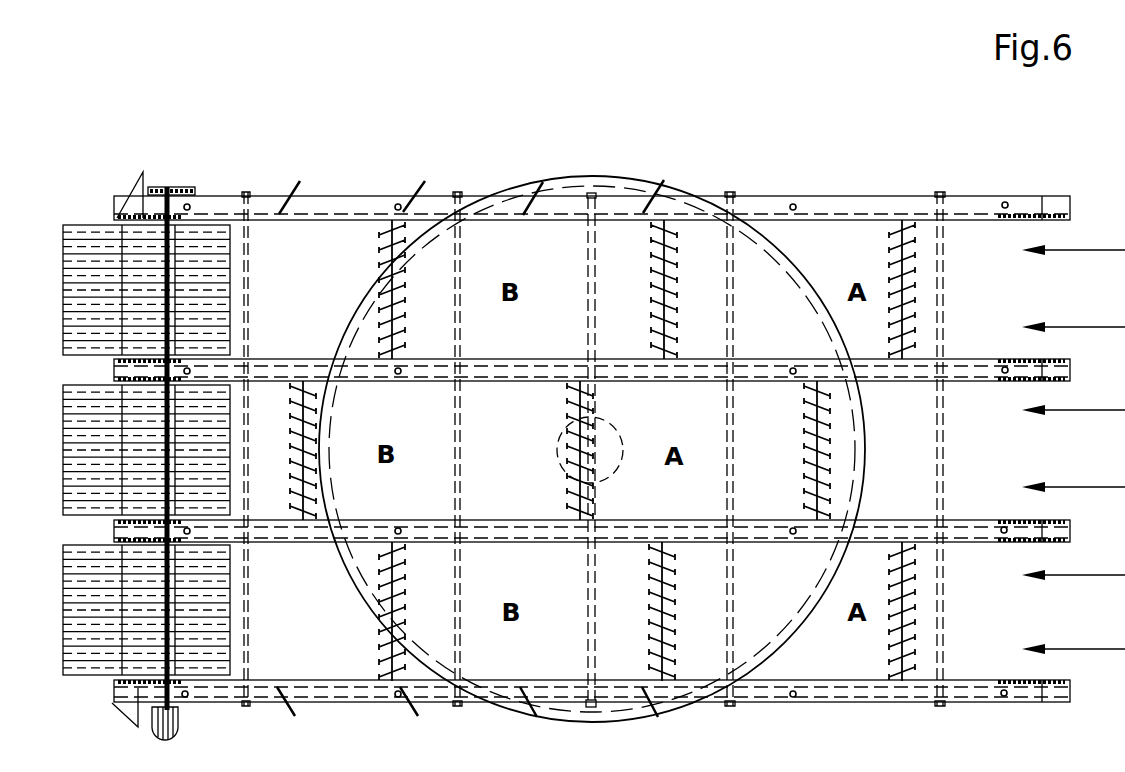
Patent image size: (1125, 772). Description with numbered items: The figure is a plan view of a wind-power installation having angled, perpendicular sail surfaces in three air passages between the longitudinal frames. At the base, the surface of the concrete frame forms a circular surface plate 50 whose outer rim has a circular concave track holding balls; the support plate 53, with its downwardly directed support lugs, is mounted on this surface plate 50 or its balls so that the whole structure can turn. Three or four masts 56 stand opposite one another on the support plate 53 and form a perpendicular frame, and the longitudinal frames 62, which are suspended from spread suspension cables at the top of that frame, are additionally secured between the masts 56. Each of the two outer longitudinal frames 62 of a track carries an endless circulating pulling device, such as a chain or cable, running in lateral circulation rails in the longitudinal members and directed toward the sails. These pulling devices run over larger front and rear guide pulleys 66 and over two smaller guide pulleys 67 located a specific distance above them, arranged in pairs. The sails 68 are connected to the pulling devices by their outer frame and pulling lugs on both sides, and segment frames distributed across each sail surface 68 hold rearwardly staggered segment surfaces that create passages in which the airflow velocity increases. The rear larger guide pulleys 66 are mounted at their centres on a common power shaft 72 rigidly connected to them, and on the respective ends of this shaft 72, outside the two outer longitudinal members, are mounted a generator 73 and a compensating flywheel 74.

The circular surface plate 50 is at (757, 265).
The support plate 53 is at (523, 191).
The masts 56 is at (579, 216).
The longitudinal frames 62 is at (862, 194).
The larger guide pulleys 66 is at (157, 216).
The smaller guide pulleys 67 is at (128, 216).
The sails 68 is at (200, 286).
The power shaft 72 is at (168, 250).
The generator 73 is at (178, 722).
The compensating flywheel 74 is at (186, 189).